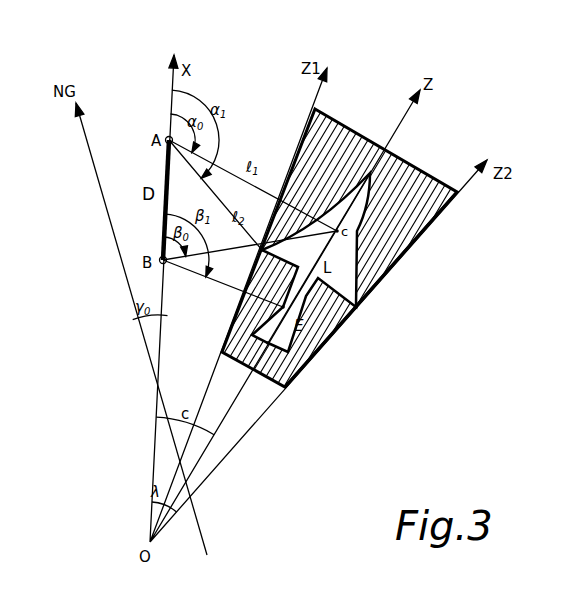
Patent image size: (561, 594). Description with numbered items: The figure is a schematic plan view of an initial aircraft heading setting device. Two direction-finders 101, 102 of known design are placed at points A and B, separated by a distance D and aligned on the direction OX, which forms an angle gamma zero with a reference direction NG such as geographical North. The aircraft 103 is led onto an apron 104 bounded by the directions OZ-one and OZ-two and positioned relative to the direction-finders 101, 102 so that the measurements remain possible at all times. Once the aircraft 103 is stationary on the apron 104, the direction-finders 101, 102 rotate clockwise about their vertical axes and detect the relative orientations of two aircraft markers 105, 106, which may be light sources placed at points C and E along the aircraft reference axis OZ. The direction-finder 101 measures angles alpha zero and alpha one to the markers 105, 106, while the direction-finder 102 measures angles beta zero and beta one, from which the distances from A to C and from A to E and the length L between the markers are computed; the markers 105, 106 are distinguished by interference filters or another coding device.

The direction-finder 101 is at (166, 137).
The direction-finder 102 is at (160, 256).
The aircraft 103 is at (352, 265).
The apron 104 is at (408, 178).
The aircraft marker 105 is at (336, 228).
The aircraft marker 106 is at (333, 340).